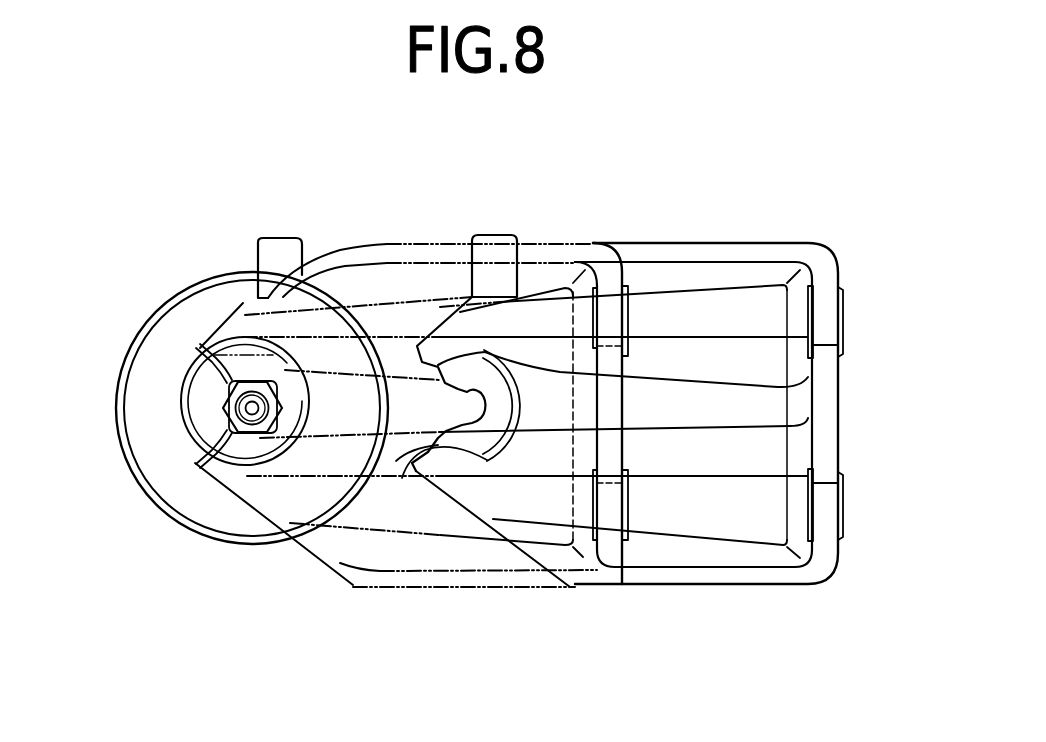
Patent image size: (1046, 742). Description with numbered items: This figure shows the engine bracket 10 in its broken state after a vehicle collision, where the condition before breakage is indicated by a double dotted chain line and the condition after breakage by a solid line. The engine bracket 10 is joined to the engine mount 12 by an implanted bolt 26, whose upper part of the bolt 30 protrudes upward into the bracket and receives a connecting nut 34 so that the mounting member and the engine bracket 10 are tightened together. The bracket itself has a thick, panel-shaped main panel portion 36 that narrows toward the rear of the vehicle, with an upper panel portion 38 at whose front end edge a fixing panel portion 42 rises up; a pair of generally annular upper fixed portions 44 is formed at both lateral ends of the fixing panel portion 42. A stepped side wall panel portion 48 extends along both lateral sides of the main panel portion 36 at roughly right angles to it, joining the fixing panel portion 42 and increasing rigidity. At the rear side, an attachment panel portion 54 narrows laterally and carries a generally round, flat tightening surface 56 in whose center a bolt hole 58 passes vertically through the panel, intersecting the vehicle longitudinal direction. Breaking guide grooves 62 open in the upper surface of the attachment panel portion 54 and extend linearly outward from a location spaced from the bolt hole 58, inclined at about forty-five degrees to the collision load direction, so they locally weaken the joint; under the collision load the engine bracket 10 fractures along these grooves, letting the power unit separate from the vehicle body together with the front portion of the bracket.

The engine bracket 10 is at (754, 178).
The engine mount 12 is at (160, 286).
The implanted bolt 26 is at (277, 432).
The upper part of the bolt 30 is at (252, 414).
The connecting nut 34 is at (273, 383).
The main panel portion 36 is at (564, 517).
The upper panel portion 38 is at (748, 515).
The fixing panel portion 42 is at (828, 413).
The upper fixed portions 44 is at (843, 318).
The side wall panel portion 48 is at (637, 242).
The attachment panel portion 54 is at (177, 458).
The tightening surface 56 is at (210, 410).
The bolt hole 58 is at (507, 270).
The breaking guide grooves 62 is at (418, 356).